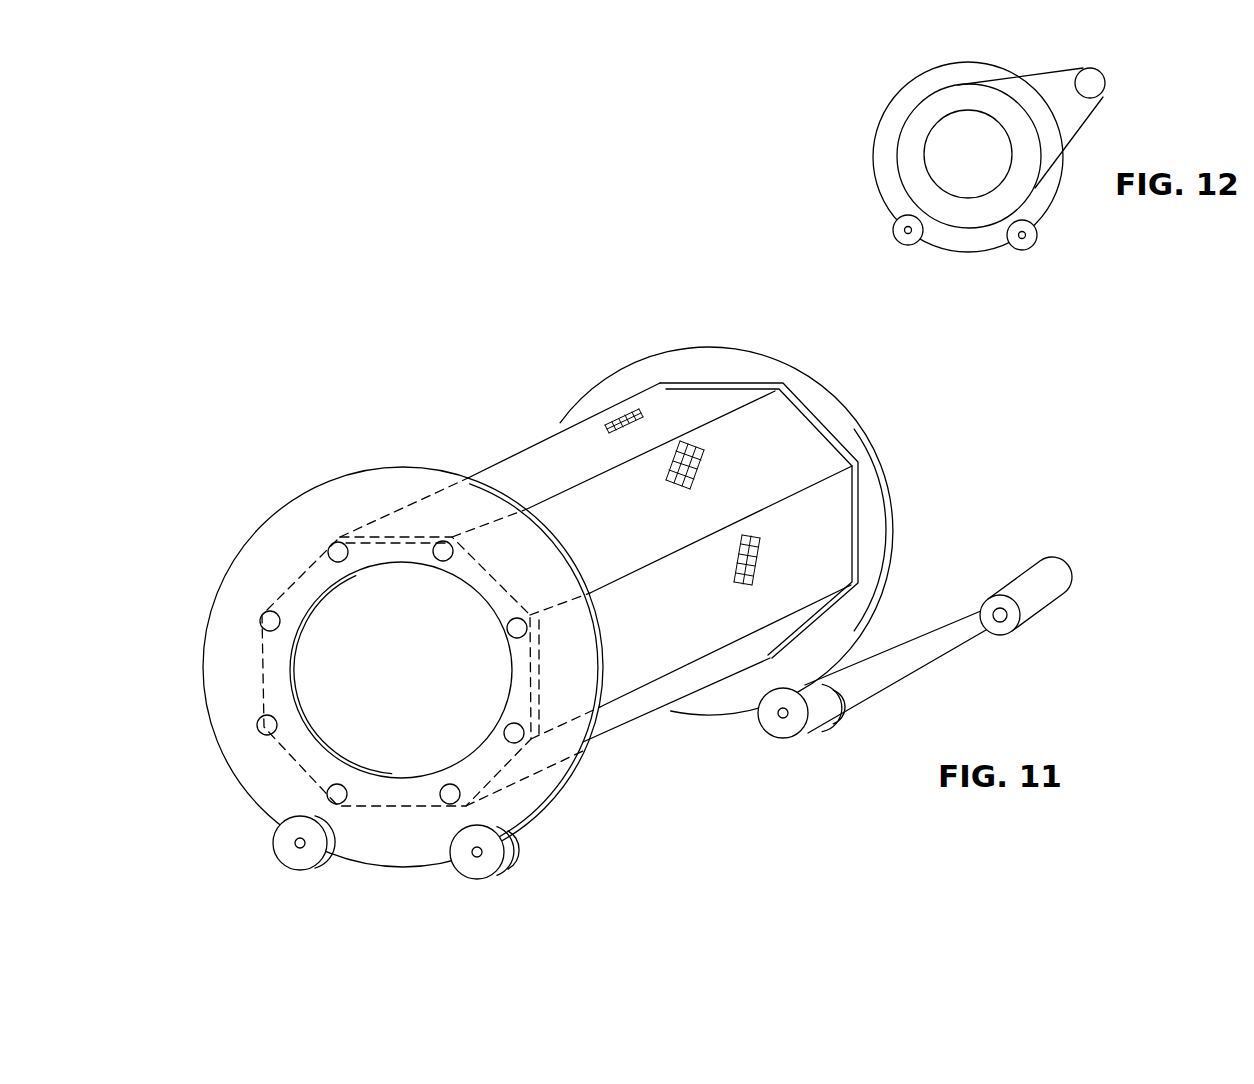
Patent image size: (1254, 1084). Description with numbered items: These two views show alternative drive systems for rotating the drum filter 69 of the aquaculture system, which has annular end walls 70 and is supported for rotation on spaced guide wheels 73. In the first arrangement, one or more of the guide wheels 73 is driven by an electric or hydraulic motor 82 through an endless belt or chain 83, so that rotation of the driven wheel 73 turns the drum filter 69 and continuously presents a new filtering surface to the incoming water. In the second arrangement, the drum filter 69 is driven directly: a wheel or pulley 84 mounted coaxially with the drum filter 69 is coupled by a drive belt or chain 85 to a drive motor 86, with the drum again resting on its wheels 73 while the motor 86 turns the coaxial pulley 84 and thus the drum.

In FIG. 11, the drum filter 69 is at (530, 418).
In FIG. 12, the drum filter 69 is at (896, 80).
In FIG. 11, the annular end wall 70 is at (565, 785).
In FIG. 11, the guide wheel 73 is at (305, 867).
In FIG. 12, the guide wheel 73 is at (893, 230).
In FIG. 11, the motor 82 is at (1033, 613).
In FIG. 11, the endless belt or chain 83 is at (920, 673).
In FIG. 12, the wheel or pulley 84 is at (902, 123).
In FIG. 12, the drive belt or chain 85 is at (1085, 125).
In FIG. 12, the drive motor 86 is at (1100, 83).